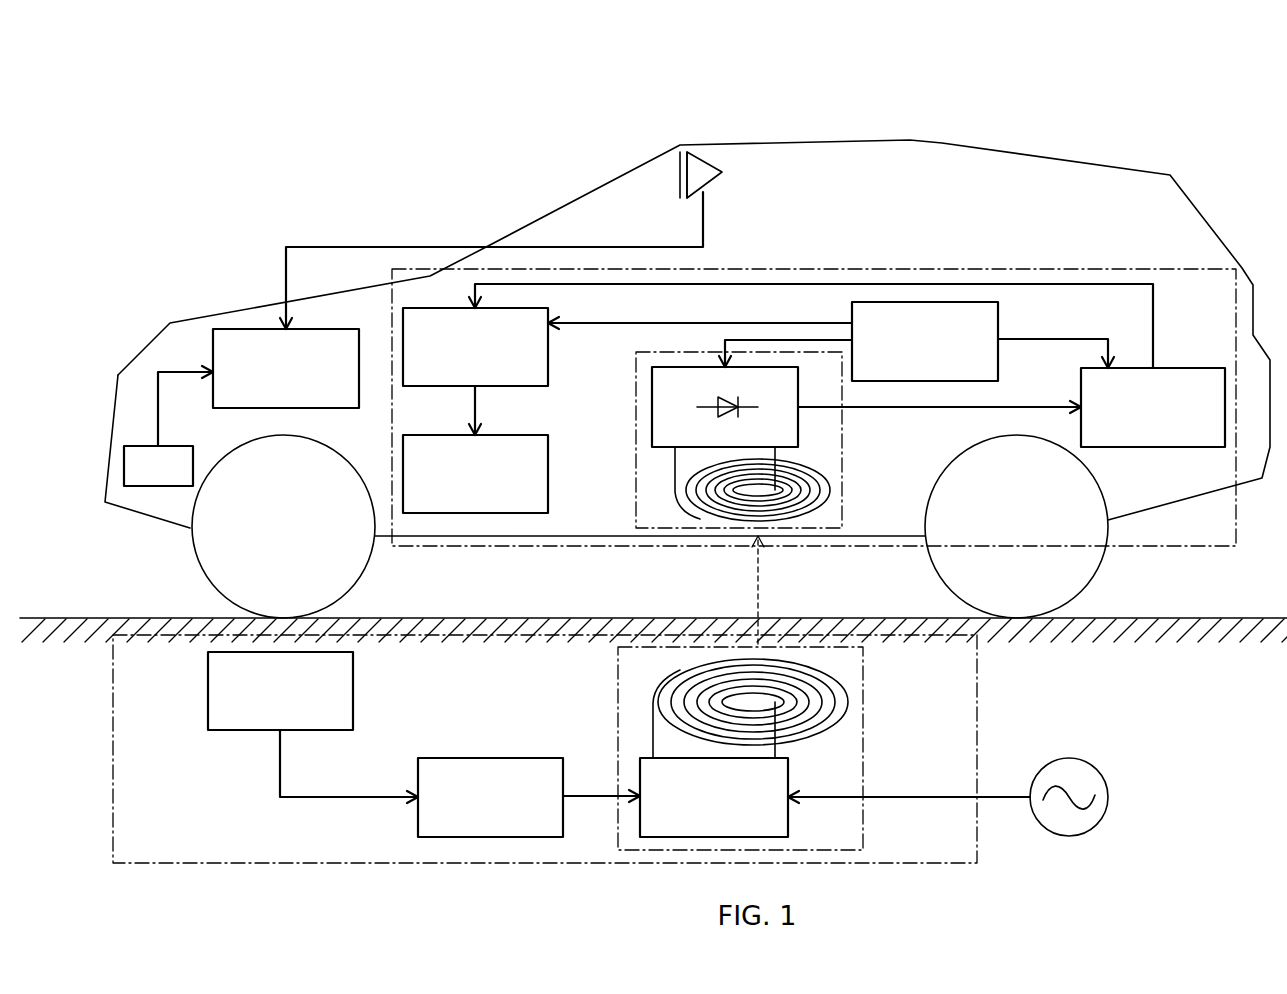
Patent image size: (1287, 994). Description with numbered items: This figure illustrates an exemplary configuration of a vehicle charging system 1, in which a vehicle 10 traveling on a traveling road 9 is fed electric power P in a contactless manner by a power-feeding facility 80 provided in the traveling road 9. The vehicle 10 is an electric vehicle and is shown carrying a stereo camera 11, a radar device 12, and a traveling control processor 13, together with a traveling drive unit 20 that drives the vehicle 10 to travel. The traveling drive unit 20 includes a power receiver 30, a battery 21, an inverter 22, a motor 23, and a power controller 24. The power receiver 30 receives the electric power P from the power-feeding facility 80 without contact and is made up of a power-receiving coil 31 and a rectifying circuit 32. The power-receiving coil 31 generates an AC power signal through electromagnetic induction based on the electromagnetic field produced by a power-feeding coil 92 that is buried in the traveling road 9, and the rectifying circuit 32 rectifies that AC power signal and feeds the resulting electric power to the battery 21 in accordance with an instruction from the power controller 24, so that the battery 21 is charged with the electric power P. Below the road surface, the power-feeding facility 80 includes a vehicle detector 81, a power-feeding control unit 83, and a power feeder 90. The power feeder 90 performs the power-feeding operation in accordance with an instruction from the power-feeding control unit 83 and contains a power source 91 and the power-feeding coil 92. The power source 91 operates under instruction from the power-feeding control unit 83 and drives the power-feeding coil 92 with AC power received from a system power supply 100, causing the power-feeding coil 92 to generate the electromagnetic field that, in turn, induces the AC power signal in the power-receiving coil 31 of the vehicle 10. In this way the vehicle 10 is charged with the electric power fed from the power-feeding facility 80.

The vehicle charging system 1 is at (1226, 83).
The traveling road 9 is at (1257, 617).
The vehicle 10 is at (1093, 163).
The stereo camera 11 is at (722, 172).
The radar device 12 is at (180, 444).
The traveling control processor 13 is at (236, 328).
The traveling drive unit 20 is at (1047, 267).
The battery 21 is at (1191, 368).
The inverter 22 is at (548, 358).
The motor 23 is at (548, 455).
The power controller 24 is at (998, 313).
The power receiver 30 is at (842, 427).
The power-receiving coil 31 is at (830, 488).
The rectifying circuit 32 is at (798, 434).
The electric power P is at (760, 580).
The power-feeding facility 80 is at (977, 698).
The vehicle detector 81 is at (353, 703).
The power-feeding control unit 83 is at (531, 757).
The power feeder 90 is at (863, 670).
The power source 91 is at (788, 764).
The power-feeding coil 92 is at (852, 702).
The system power supply 100 is at (1108, 797).